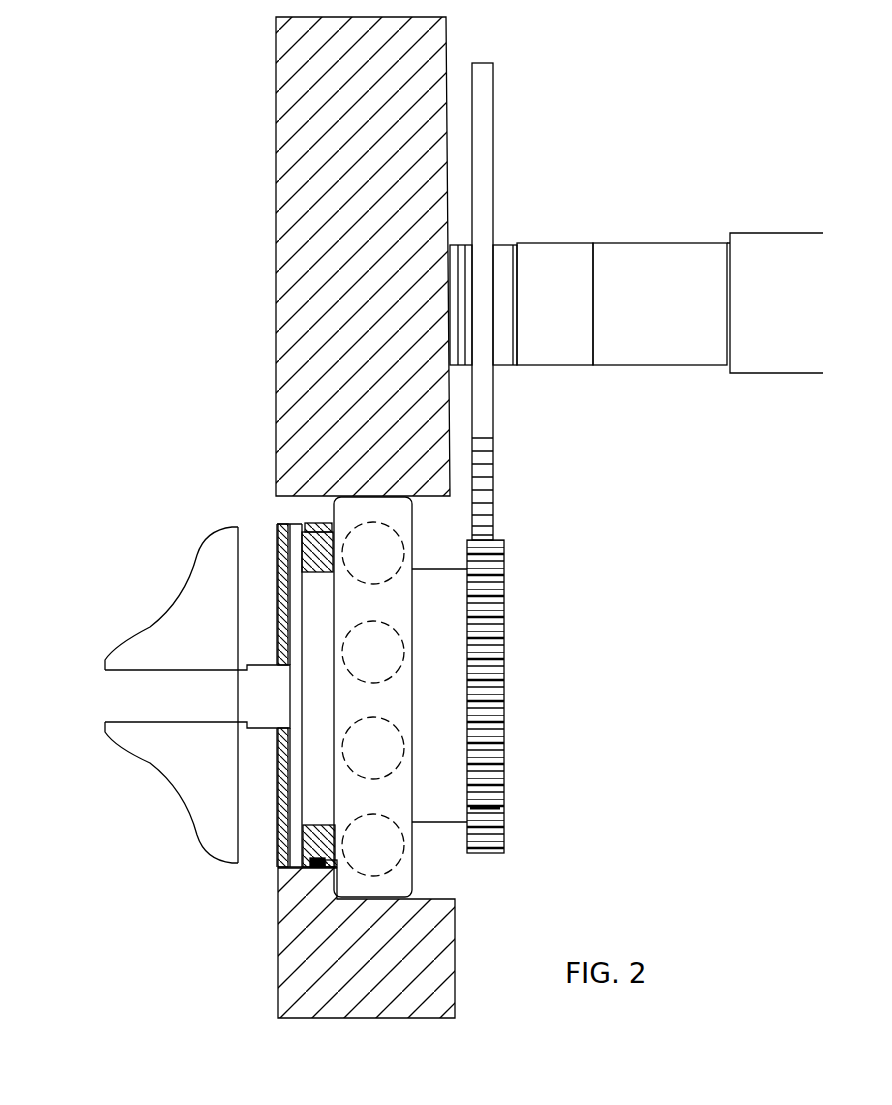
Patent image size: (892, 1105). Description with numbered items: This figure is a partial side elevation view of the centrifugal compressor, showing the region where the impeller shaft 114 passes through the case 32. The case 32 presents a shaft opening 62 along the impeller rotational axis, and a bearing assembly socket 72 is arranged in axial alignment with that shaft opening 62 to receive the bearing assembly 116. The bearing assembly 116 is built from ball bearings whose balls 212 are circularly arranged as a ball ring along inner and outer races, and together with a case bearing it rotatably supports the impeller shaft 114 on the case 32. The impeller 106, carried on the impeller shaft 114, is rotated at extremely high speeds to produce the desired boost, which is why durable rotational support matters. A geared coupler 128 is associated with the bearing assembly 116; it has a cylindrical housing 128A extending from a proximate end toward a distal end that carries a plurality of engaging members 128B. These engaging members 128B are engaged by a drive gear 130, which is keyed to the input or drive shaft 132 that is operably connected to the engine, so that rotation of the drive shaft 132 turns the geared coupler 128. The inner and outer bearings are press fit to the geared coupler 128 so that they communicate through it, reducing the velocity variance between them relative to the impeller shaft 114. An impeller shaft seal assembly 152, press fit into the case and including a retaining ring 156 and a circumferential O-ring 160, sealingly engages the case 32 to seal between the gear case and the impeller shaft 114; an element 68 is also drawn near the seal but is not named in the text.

The case 32 is at (418, 40).
The drive gear 130 is at (487, 132).
The input or drive shaft 132 is at (778, 352).
The shaft opening 62 is at (430, 496).
The balls 212 is at (380, 643).
The bearing assembly 116 is at (452, 777).
The geared coupler 128 is at (543, 696).
The cylindrical housing 128A is at (447, 810).
The engaging members 128B is at (493, 808).
The impeller 106 is at (160, 757).
The impeller shaft 114 is at (113, 695).
The impeller shaft seal assembly 152 is at (290, 580).
The retaining ring 156 is at (280, 840).
The circumferential O-ring 160 is at (318, 530).
The bearing assembly socket 72 is at (318, 523).
The washer 68 is at (308, 867).